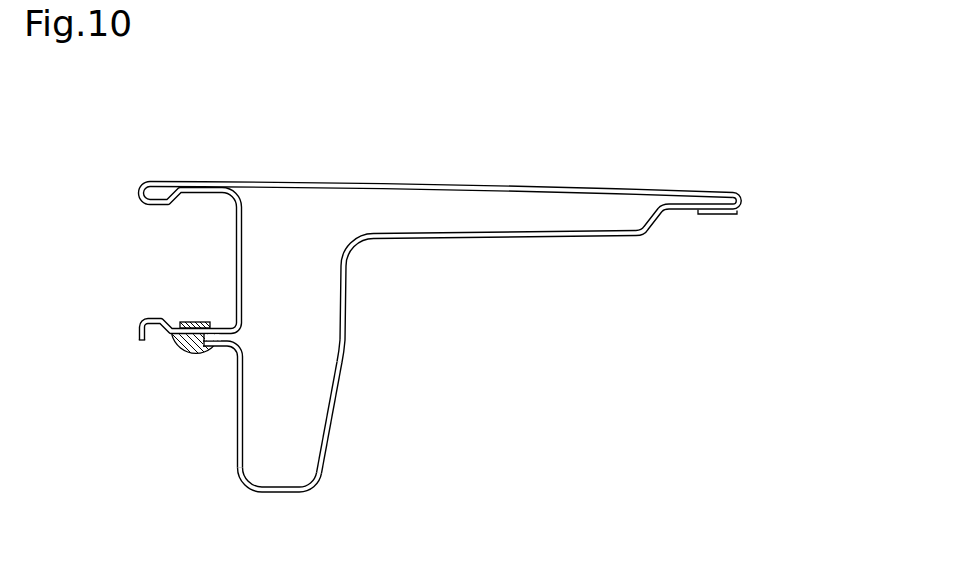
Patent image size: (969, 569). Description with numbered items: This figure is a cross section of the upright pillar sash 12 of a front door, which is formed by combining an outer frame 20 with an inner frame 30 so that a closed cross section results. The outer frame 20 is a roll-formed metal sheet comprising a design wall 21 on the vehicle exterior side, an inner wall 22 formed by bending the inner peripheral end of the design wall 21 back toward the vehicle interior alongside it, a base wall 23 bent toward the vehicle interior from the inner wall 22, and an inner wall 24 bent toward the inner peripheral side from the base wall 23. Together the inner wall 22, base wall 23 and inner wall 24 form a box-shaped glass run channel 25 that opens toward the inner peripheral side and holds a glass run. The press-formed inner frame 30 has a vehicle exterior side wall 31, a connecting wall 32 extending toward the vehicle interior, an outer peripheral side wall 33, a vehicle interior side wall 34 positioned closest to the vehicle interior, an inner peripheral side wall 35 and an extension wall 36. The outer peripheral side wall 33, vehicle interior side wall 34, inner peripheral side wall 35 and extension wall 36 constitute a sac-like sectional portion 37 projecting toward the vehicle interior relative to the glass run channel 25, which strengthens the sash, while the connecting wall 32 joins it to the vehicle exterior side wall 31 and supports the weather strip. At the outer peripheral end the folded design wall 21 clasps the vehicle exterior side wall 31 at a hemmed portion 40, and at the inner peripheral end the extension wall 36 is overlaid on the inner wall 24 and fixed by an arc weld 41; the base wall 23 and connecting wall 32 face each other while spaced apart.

The upright pillar sash 12 is at (447, 313).
The outer frame 20 is at (440, 208).
The design wall 21 is at (511, 184).
The inner wall 22 is at (202, 196).
The base wall 23 is at (242, 283).
The inner wall 24 is at (178, 330).
The glass run channel 25 is at (234, 262).
The inner frame 30 is at (431, 379).
The vehicle exterior side wall 31 is at (510, 241).
The connecting wall 32 is at (344, 283).
The outer peripheral side wall 33 is at (330, 428).
The vehicle interior side wall 34 is at (288, 493).
The inner peripheral side wall 35 is at (237, 422).
The extension wall 36 is at (208, 347).
The sac-like sectional portion 37 is at (376, 369).
The hemmed portion 40 is at (714, 214).
The arc weld 41 is at (188, 350).